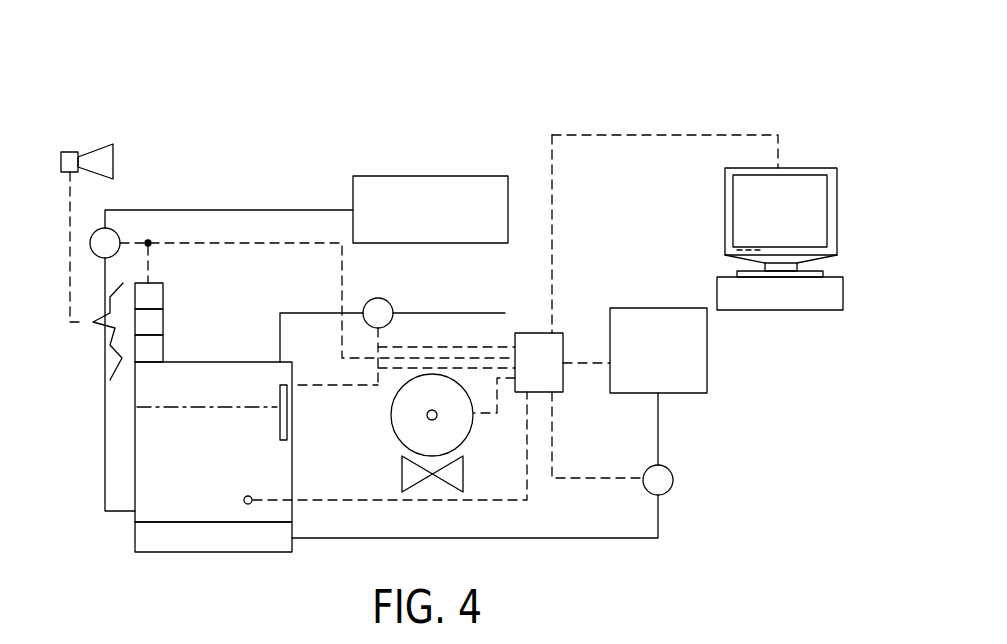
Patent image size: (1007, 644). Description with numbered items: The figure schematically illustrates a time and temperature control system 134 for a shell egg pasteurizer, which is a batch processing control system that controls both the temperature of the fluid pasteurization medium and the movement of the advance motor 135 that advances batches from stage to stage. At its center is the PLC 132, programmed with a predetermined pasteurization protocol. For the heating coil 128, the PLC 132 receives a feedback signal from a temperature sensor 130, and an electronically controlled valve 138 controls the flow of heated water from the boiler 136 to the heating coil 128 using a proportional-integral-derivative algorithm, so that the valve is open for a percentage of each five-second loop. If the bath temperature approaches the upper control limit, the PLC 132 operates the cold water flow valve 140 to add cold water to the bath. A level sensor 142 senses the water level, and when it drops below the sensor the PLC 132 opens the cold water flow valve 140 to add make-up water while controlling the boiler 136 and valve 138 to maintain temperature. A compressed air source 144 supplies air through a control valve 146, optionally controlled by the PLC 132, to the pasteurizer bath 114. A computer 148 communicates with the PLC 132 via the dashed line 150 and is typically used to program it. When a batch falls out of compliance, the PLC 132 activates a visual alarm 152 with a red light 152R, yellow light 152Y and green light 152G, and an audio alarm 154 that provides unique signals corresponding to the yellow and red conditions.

The time and temperature control system 134 is at (495, 52).
The audio alarm 154 is at (70, 152).
The control valve 146 is at (117, 232).
The visual alarm 152 is at (165, 276).
The red light 152R is at (160, 292).
The yellow light 152Y is at (135, 321).
The green light 152G is at (135, 348).
The pasteurizer bath 114 is at (147, 482).
The level sensor 142 is at (280, 391).
The heating coil 128 is at (212, 553).
The temperature sensor 130 is at (251, 505).
The compressed air source 144 is at (432, 176).
The cold water flow valve 140 is at (378, 298).
The PLC 132 is at (555, 394).
The advance motor 135 is at (455, 428).
The boiler 136 is at (707, 350).
The electronically controlled valve 138 is at (672, 484).
The computer 148 is at (743, 207).
The dashed line 150 is at (665, 135).